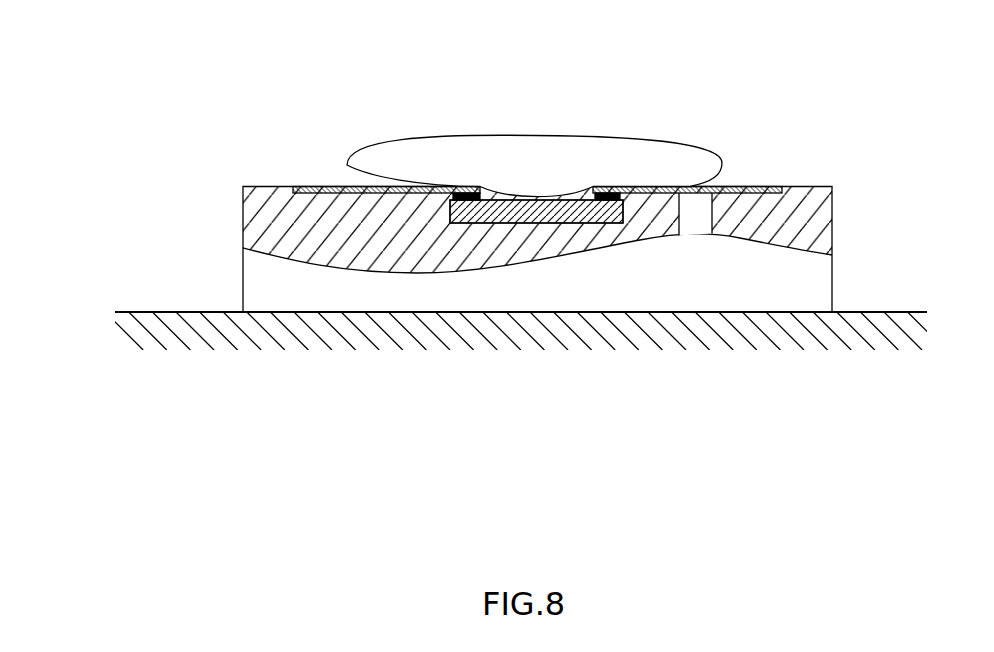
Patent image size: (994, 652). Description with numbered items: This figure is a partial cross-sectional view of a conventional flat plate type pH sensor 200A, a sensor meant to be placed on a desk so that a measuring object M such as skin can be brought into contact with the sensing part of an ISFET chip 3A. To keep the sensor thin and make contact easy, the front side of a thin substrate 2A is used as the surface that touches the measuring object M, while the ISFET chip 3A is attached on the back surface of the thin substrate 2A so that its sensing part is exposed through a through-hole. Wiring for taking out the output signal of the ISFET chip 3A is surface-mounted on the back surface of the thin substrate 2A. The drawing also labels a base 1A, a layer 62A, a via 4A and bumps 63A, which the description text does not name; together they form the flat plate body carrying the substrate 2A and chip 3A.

The pH sensor 200A is at (469, 224).
The substrate 1A is at (205, 281).
The base body layer 62A is at (388, 233).
The thin substrate 2A is at (329, 186).
The ISFET chip 3A is at (538, 224).
The via conductor 4A is at (713, 203).
The bump 63A is at (466, 193).
The measuring object M is at (621, 136).